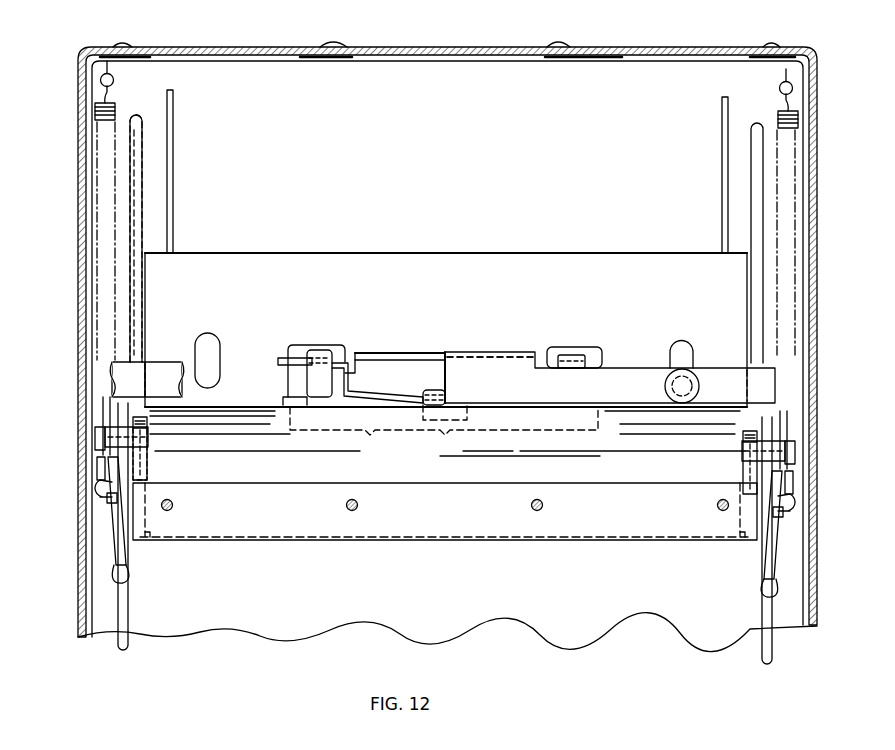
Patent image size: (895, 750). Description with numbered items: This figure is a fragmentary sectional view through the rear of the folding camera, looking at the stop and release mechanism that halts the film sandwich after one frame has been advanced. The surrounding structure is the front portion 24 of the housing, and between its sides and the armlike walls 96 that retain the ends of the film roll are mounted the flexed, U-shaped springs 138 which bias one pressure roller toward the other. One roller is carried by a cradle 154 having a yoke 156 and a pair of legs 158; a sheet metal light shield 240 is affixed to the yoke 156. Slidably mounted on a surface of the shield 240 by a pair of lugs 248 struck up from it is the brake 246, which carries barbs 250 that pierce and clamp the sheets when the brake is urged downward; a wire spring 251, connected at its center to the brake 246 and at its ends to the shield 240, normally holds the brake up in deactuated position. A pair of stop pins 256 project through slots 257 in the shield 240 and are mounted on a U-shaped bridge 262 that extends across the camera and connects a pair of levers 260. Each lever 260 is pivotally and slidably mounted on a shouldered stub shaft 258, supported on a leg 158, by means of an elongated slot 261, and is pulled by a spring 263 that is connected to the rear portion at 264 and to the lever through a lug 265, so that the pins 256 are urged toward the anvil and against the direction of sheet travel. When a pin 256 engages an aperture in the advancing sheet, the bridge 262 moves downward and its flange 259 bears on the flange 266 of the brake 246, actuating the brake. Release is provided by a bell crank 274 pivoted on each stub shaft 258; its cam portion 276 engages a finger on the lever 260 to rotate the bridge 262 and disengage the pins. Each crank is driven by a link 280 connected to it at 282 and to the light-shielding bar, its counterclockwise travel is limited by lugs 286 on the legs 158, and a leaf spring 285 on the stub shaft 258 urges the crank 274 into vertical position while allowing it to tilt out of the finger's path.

The front portion 24 is at (78, 52).
The spring connection to rear portion 264 is at (113, 78).
The spring 263 is at (116, 110).
The U-shaped spring 138 is at (145, 150).
The armlike wall 96 is at (174, 222).
The shield 240 is at (446, 365).
The yoke 156 is at (445, 511).
The cradle 154 is at (222, 503).
The barbs 250 is at (385, 440).
The U-shaped bridge 262 is at (165, 364).
The slot 257 is at (213, 333).
The lug 248 is at (320, 350).
The brake 246 is at (378, 356).
The wire spring 251 is at (370, 390).
The flange 266 is at (436, 350).
The flange 259 is at (495, 352).
The stop pin 256 is at (666, 386).
The lug 286 is at (118, 430).
The lug 265 is at (94, 437).
The leg 158 is at (150, 430).
The lever 260 is at (140, 478).
The shouldered stub shaft 258 is at (96, 470).
The link connection to crank 282 is at (95, 490).
The leaf spring 285 is at (108, 500).
The bell crank 274 is at (108, 540).
The cam portion 276 is at (126, 582).
The link 280 is at (130, 650).
The elongated slot 261 is at (128, 543).